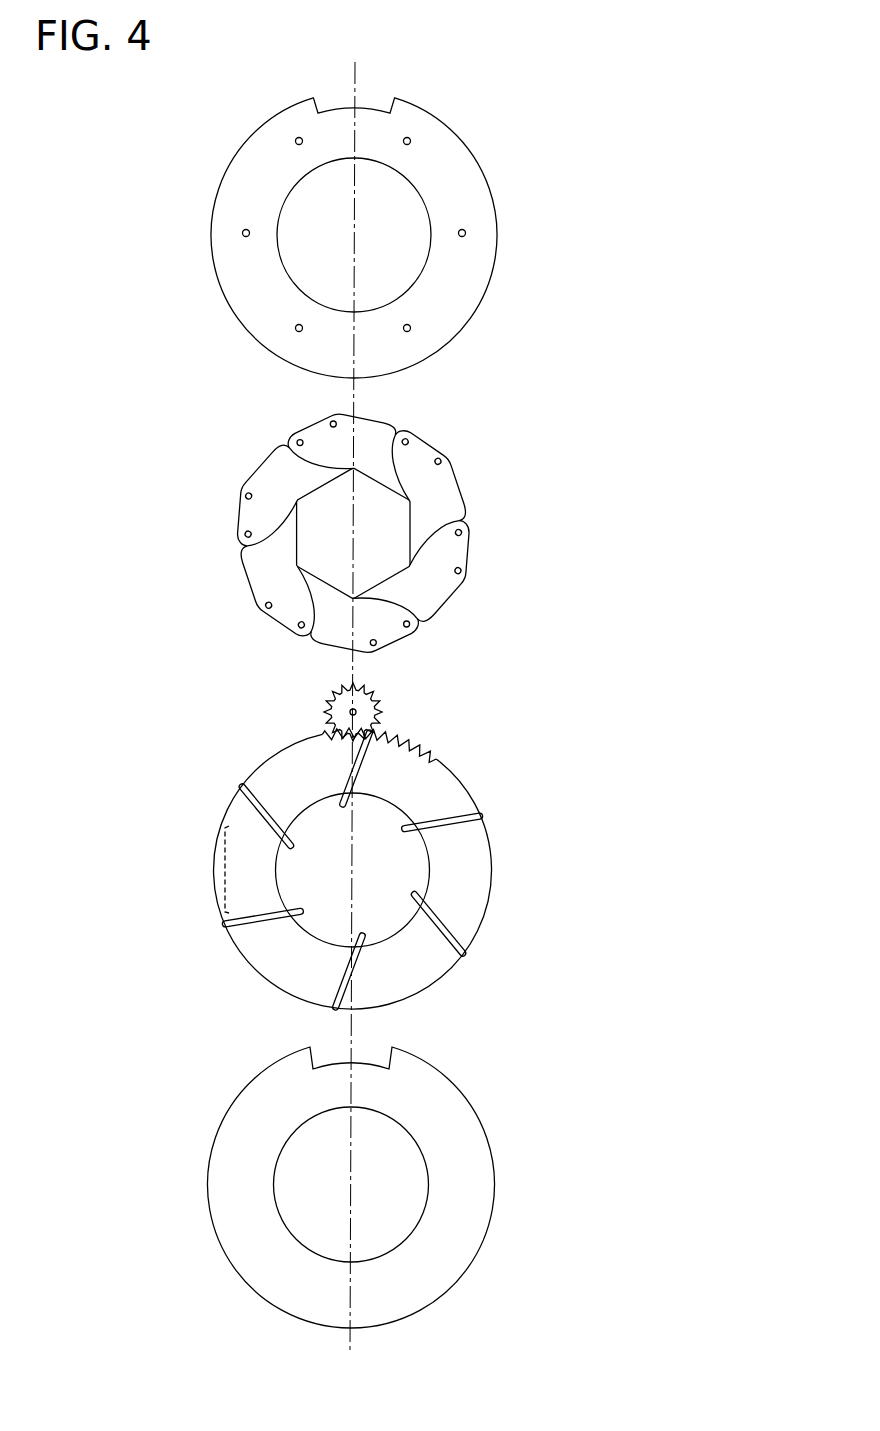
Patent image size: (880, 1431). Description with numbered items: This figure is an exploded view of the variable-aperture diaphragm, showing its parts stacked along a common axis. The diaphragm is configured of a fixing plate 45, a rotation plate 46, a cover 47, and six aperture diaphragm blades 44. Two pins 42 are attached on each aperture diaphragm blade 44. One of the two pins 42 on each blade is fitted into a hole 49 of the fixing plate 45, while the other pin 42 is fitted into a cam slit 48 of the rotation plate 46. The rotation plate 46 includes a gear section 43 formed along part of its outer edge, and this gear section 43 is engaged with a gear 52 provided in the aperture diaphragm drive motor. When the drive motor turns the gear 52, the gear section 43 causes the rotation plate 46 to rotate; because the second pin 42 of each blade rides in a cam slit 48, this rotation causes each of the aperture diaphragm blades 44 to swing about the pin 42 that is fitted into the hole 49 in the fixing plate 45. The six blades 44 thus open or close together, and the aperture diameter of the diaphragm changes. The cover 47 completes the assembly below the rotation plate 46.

The pins 42 is at (242, 533).
The gear section 43 is at (414, 748).
The aperture diaphragm blades 44 is at (450, 483).
The fixing plate 45 is at (470, 170).
The rotation plate 46 is at (476, 875).
The cover 47 is at (484, 1183).
The cam slit 48 is at (446, 821).
The hole 49 is at (241, 233).
The gear 52 is at (381, 705).